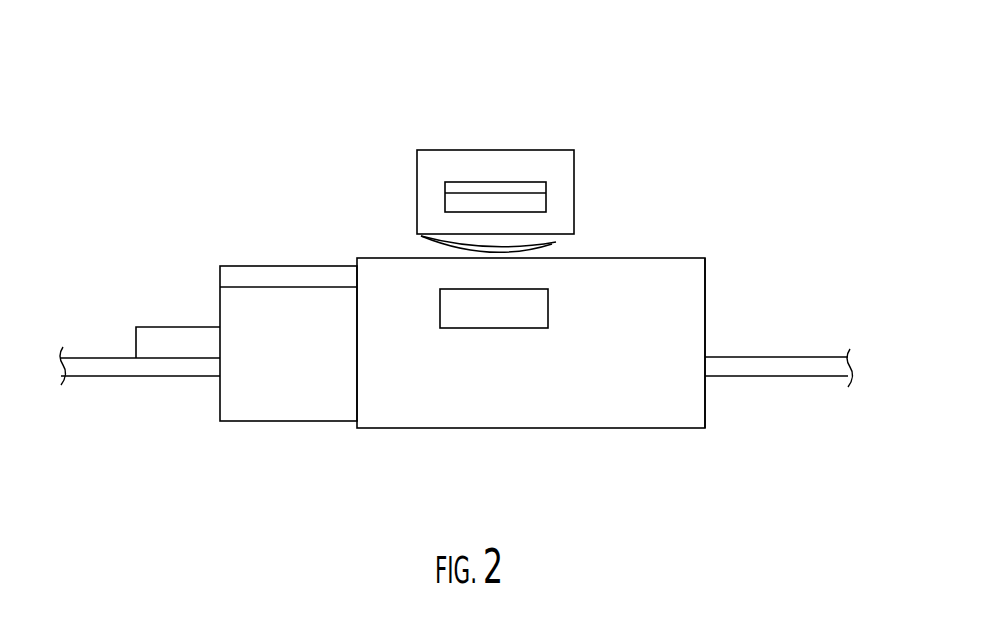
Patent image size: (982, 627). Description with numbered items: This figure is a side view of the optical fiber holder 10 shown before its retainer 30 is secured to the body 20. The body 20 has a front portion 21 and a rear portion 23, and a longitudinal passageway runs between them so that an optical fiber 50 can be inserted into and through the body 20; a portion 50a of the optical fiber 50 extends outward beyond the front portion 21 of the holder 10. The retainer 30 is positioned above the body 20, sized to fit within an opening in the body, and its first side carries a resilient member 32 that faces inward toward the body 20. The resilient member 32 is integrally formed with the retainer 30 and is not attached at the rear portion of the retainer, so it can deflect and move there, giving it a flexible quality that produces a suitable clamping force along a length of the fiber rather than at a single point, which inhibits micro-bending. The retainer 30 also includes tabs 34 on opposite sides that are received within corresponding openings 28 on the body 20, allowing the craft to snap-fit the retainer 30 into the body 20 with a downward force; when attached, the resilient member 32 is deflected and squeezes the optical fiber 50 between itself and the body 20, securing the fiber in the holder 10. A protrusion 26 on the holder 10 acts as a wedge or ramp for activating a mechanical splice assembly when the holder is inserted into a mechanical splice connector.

The optical fiber holder 10 is at (167, 153).
The body 20 is at (580, 400).
The front portion 21 is at (253, 413).
The rear portion 23 is at (703, 430).
The protrusion 26 is at (147, 342).
The openings 28 is at (550, 292).
The retainer 30 is at (419, 173).
The resilient member 32 is at (450, 248).
The tabs 34 is at (545, 188).
The optical fiber 50 is at (747, 376).
The portion of optical fiber 50a is at (158, 380).